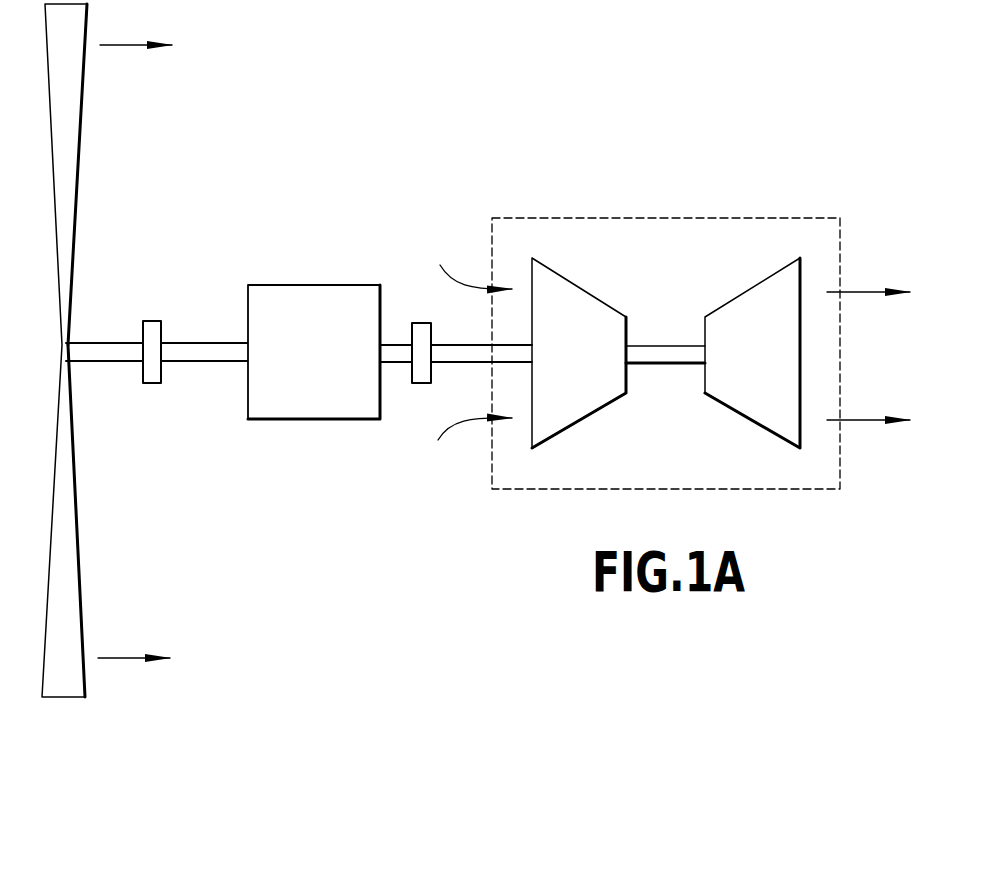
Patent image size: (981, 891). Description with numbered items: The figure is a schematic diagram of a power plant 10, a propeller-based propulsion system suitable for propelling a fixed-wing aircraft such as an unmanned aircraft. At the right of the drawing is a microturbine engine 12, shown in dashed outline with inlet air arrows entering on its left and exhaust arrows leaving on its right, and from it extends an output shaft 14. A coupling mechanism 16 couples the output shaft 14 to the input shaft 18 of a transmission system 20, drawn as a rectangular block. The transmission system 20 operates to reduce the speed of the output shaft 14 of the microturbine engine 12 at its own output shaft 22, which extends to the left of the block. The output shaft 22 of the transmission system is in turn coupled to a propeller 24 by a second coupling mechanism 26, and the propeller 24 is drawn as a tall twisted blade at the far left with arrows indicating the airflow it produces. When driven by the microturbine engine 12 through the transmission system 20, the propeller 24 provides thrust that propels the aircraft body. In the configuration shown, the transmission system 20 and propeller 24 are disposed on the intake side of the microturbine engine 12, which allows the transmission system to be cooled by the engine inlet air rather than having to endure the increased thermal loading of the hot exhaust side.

The power plant 10 is at (303, 252).
The microturbine engine 12 is at (692, 217).
The output shaft 14 is at (483, 364).
The coupling mechanism 16 is at (414, 323).
The input shaft 18 is at (384, 363).
The transmission system 20 is at (292, 420).
The output shaft 22 is at (218, 343).
The propeller 24 is at (80, 118).
The coupling mechanism 26 is at (148, 384).